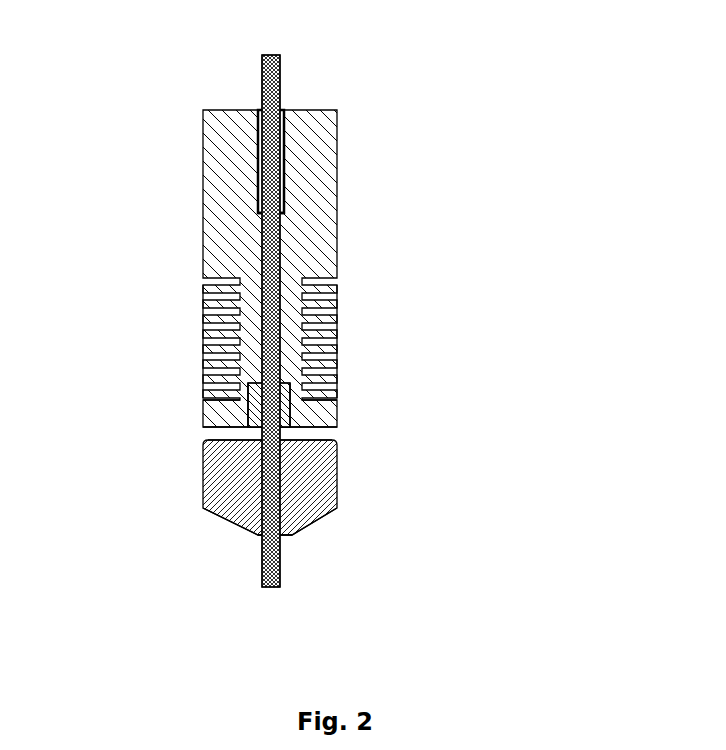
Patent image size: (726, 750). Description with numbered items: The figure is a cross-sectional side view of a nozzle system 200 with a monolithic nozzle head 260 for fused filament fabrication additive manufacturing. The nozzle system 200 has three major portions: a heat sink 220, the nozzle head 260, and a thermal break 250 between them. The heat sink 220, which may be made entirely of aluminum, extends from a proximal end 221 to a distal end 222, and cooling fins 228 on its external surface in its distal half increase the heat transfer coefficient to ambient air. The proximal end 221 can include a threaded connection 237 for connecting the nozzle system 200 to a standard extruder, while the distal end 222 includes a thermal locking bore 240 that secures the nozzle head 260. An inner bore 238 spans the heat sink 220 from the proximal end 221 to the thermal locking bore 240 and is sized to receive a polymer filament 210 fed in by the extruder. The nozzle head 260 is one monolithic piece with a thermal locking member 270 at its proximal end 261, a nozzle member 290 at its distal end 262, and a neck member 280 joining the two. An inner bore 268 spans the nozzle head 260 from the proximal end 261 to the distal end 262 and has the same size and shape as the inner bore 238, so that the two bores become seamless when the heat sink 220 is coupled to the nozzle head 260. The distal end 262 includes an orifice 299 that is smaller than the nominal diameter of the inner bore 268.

The nozzle system 200 is at (397, 31).
The polymer filament 210 is at (281, 78).
The heat sink 220 is at (213, 252).
The proximal end 221 is at (324, 109).
The distal end 222 is at (337, 429).
The cooling fins 228 is at (205, 333).
The threaded connection 237 is at (266, 160).
The inner bore 238 is at (268, 262).
The thermal locking bore 240 is at (255, 413).
The thermal break 250 is at (262, 432).
The nozzle head 260 is at (364, 510).
The proximal end 261 is at (282, 382).
The distal end 262 is at (312, 530).
The inner bore 268 is at (265, 478).
The thermal locking member 270 is at (300, 408).
The neck member 280 is at (300, 446).
The nozzle member 290 is at (338, 505).
The orifice 299 is at (288, 548).